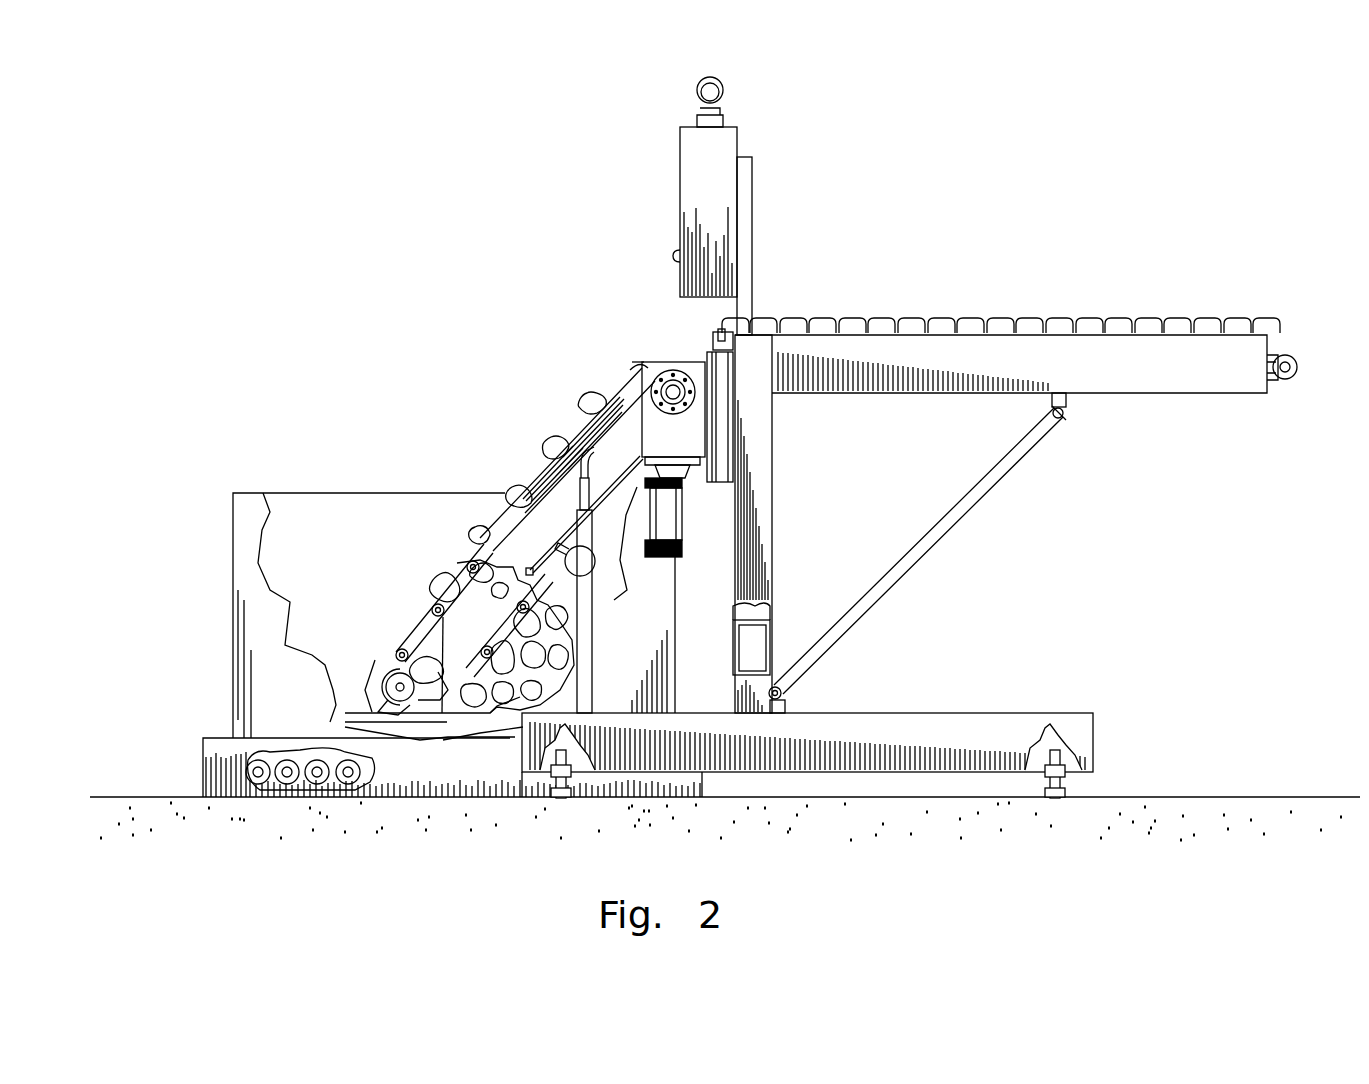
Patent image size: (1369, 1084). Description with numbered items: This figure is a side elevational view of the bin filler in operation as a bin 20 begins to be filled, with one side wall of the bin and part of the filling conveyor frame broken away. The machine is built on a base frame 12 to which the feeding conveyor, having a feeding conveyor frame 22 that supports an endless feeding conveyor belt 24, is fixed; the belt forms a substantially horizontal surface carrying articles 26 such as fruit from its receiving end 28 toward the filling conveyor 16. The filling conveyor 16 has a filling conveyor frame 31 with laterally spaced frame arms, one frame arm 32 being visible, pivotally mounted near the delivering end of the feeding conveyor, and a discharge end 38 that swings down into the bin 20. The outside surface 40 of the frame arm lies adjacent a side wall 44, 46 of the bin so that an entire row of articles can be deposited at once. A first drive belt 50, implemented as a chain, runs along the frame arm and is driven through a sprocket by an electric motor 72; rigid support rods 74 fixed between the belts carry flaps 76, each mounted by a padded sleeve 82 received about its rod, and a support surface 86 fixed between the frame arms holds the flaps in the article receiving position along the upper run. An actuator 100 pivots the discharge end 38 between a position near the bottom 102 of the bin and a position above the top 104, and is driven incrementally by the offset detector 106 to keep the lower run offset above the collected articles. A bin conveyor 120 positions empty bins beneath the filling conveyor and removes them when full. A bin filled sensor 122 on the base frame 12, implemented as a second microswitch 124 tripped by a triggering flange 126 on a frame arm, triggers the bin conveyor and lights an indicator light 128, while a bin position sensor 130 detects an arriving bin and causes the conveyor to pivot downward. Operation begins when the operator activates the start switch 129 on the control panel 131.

The base frame 12 is at (825, 692).
The filling conveyor 16 is at (511, 392).
The bin 20 is at (250, 716).
The feeding conveyor frame 22 is at (1194, 390).
The feeding conveyor belt 24 is at (1285, 352).
The articles 26 is at (1012, 318).
The receiving end 28 is at (397, 702).
The filling conveyor frame 31 is at (599, 453).
The frame arm 32 is at (537, 503).
The discharge end 38 is at (393, 692).
The outside surface 40 is at (633, 446).
The side wall 44 is at (268, 539).
The side wall 46 is at (339, 551).
The first drive belt 50 is at (433, 600).
The electric motor 72 is at (683, 447).
The support rods 74 is at (465, 560).
The flap 76 is at (442, 713).
The padded sleeve 82 is at (430, 600).
The support surface 86 is at (480, 556).
The actuator 100 is at (592, 573).
The bottom 102 is at (357, 700).
The top 104 is at (255, 493).
The offset detector 106 is at (592, 612).
The bin conveyor 120 is at (212, 788).
The bin filled sensor 122 is at (692, 326).
The second microswitch 124 is at (747, 330).
The triggering flange 126 is at (710, 343).
The indicator light 128 is at (722, 88).
The start switch 129 is at (675, 252).
The bin position sensor 130 is at (770, 640).
The control panel 131 is at (690, 152).